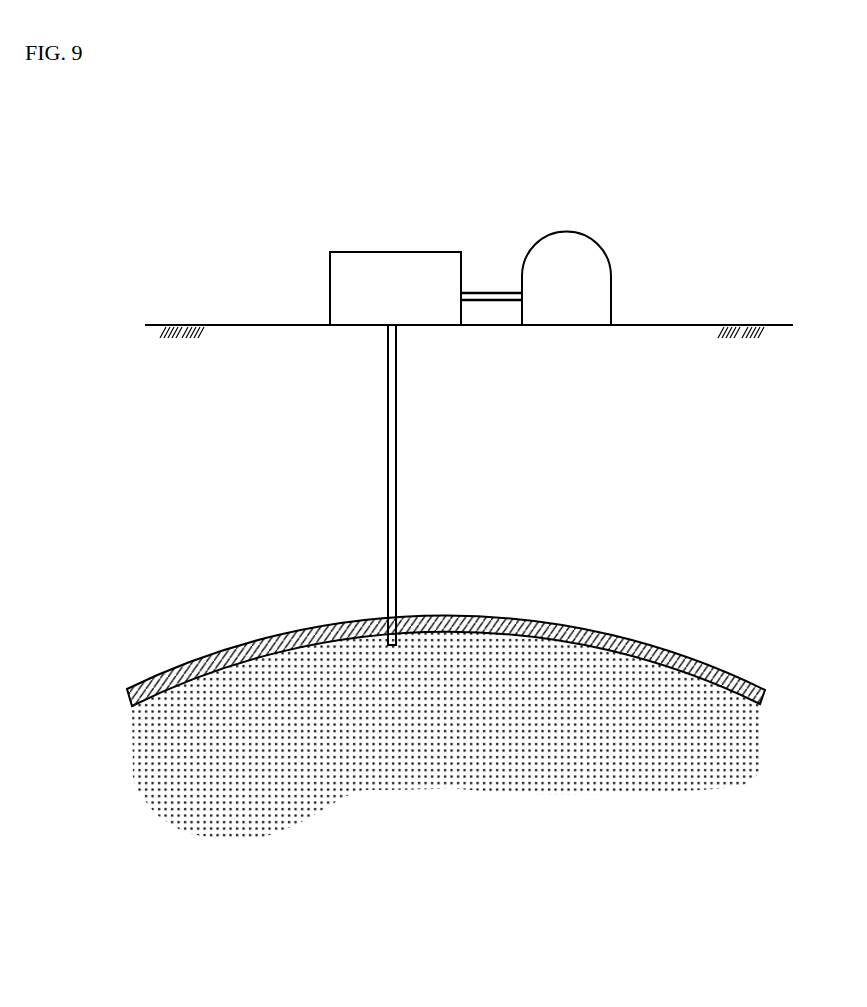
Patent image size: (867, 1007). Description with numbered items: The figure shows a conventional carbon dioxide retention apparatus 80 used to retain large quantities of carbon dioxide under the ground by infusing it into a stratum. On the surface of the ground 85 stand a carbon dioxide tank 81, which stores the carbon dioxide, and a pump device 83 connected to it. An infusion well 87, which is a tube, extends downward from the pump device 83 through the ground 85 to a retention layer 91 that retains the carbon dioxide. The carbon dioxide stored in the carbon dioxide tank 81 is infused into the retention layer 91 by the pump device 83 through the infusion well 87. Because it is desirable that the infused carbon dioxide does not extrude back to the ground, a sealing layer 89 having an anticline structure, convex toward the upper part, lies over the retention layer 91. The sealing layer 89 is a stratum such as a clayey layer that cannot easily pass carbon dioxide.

The carbon dioxide retention apparatus 80 is at (490, 212).
The carbon dioxide tank 81 is at (587, 267).
The pump device 83 is at (350, 268).
The ground 85 is at (217, 326).
The infusion well 87 is at (388, 402).
The sealing layer 89 is at (158, 648).
The retention layer 91 is at (498, 687).